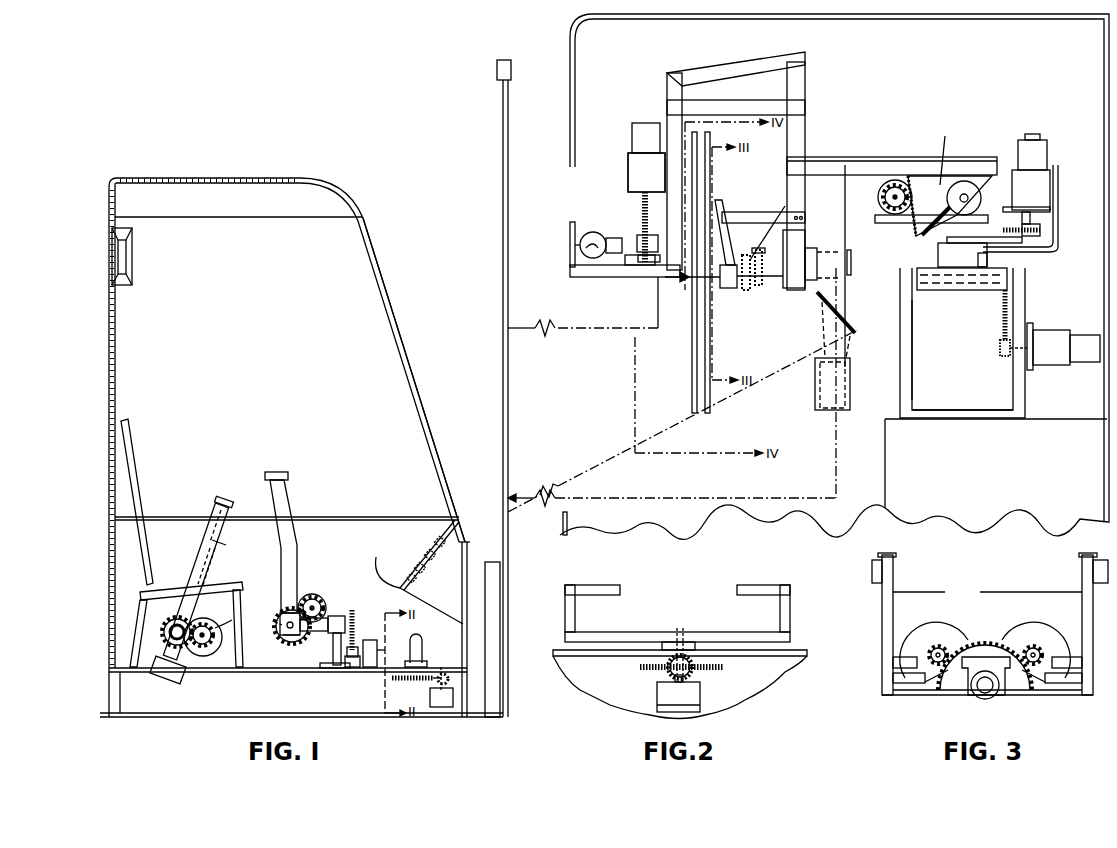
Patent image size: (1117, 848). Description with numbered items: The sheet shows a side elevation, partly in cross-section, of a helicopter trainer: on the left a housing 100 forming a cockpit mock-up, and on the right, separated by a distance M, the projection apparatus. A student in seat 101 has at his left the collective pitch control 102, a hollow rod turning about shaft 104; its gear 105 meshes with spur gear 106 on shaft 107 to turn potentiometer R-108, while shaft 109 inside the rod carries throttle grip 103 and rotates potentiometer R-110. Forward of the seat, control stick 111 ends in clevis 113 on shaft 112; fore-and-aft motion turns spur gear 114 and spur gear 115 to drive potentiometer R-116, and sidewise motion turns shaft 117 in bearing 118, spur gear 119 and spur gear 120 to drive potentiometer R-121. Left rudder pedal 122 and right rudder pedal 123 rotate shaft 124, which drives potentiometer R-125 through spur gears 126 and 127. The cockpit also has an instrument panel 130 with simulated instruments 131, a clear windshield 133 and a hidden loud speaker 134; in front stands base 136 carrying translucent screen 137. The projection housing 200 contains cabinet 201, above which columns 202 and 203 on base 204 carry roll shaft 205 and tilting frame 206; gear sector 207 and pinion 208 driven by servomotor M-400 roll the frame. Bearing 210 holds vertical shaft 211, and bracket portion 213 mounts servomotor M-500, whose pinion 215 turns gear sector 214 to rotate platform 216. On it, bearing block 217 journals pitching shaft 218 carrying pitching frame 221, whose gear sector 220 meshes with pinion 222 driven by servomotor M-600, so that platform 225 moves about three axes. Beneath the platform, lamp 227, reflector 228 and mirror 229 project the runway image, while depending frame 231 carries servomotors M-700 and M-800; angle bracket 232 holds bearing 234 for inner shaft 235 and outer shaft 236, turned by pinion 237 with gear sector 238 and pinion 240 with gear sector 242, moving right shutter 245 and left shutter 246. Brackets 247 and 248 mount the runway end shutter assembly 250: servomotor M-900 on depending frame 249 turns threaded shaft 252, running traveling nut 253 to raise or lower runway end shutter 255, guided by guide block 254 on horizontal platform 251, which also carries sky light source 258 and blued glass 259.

In FIG. 1, the housing 100 is at (255, 178).
In FIG. 1, the seat 101 is at (130, 440).
In FIG. 1, the collective pitch control 102 is at (208, 550).
In FIG. 1, the throttle grip 103 is at (216, 504).
In FIG. 1, the shaft 104 is at (172, 632).
In FIG. 1, the gear 105 is at (186, 628).
In FIG. 1, the spur gear 106 is at (224, 624).
In FIG. 1, the shaft 107 is at (195, 652).
In FIG. 1, the potentiometer R-108 is at (280, 613).
In FIG. 1, the shaft 109 is at (208, 565).
In FIG. 1, the potentiometer R-110 is at (178, 682).
In FIG. 1, the control stick 111 is at (298, 536).
In FIG. 1, the shaft 112 is at (290, 649).
In FIG. 1, the clevis 113 is at (282, 610).
In FIG. 1, the spur gear 114 is at (300, 642).
In FIG. 1, the spur gear 115 is at (312, 596).
In FIG. 1, the potentiometer R-116 is at (326, 604).
In FIG. 1, the shaft 117 is at (326, 615).
In FIG. 1, the bearing 118 is at (345, 616).
In FIG. 1, the spur gear 119 is at (355, 622).
In FIG. 1, the spur gear 120 is at (367, 655).
In FIG. 1, the potentiometer R-121 is at (375, 672).
In FIG. 2, the left rudder pedal 122 is at (612, 584).
In FIG. 1, the right rudder pedal 123 is at (422, 636).
In FIG. 2, the right rudder pedal 123 is at (752, 572).
In FIG. 1, the shaft 124 is at (435, 682).
In FIG. 2, the shaft 124 is at (678, 645).
In FIG. 1, the potentiometer R-125 is at (435, 700).
In FIG. 2, the potentiometer R-125 is at (657, 690).
In FIG. 1, the spur gear 126 is at (420, 682).
In FIG. 2, the spur gear 126 is at (640, 668).
In FIG. 1, the spur gear 127 is at (454, 681).
In FIG. 2, the spur gear 127 is at (700, 676).
In FIG. 1, the simulated instrument panel 130 is at (420, 572).
In FIG. 1, the instruments 131 is at (425, 548).
In FIG. 1, the windshield 133 is at (393, 295).
In FIG. 1, the loud speaker 134 is at (133, 268).
In FIG. 1, the base 136 is at (498, 562).
In FIG. 1, the translucent screen 137 is at (503, 358).
In FIG. 1, the housing 200 is at (570, 30).
In FIG. 1, the cabinet 201 is at (990, 445).
In FIG. 1, the column 202 is at (912, 308).
In FIG. 1, the column 203 is at (1027, 303).
In FIG. 1, the base 204 is at (985, 410).
In FIG. 1, the roll shaft 205 is at (1027, 279).
In FIG. 1, the tilting frame 206 is at (938, 258).
In FIG. 1, the gear sector 207 is at (1003, 318).
In FIG. 1, the pinion 208 is at (1000, 358).
In FIG. 1, the bearing 210 is at (975, 240).
In FIG. 1, the vertical shaft 211 is at (988, 262).
In FIG. 1, the bracket portion 213 is at (1058, 249).
In FIG. 1, the gear sector 214 is at (1020, 225).
In FIG. 1, the pinion 215 is at (1040, 228).
In FIG. 1, the platform 216 is at (880, 225).
In FIG. 1, the bearing block 217 is at (925, 232).
In FIG. 1, the pitching shaft 218 is at (966, 192).
In FIG. 1, the gear sector 220 is at (950, 206).
In FIG. 1, the pitching frame 221 is at (954, 153).
In FIG. 1, the pinion 222 is at (878, 197).
In FIG. 1, the platform 225 is at (906, 158).
In FIG. 1, the lamp 227 is at (850, 366).
In FIG. 1, the reflector 228 is at (816, 404).
In FIG. 1, the mirror 229 is at (852, 328).
In FIG. 1, the depending frame 231 is at (788, 205).
In FIG. 3, the depending frame 231 is at (987, 592).
In FIG. 1, the angle bracket 232 is at (743, 259).
In FIG. 1, the bearing 234 is at (714, 200).
In FIG. 3, the bearing 234 is at (975, 690).
In FIG. 3, the inner shaft 235 is at (985, 698).
In FIG. 3, the outer shaft 236 is at (990, 690).
In FIG. 1, the pinion 237 is at (760, 288).
In FIG. 3, the pinion 237 is at (1038, 660).
In FIG. 1, the gear sector 238 is at (755, 290).
In FIG. 3, the gear sector 238 is at (1030, 690).
In FIG. 1, the pinion 240 is at (785, 206).
In FIG. 3, the pinion 240 is at (932, 660).
In FIG. 1, the gear sector 242 is at (745, 292).
In FIG. 3, the gear sector 242 is at (945, 690).
In FIG. 1, the right shutter 245 is at (690, 340).
In FIG. 1, the left shutter 246 is at (708, 350).
In FIG. 1, the bracket 247 is at (688, 72).
In FIG. 1, the bracket 248 is at (766, 100).
In FIG. 1, the depending frame 249 is at (667, 116).
In FIG. 1, the runway end shutter assembly 250 is at (619, 134).
In FIG. 1, the horizontal platform 251 is at (572, 280).
In FIG. 1, the threaded shaft 252 is at (640, 207).
In FIG. 1, the traveling nut 253 is at (640, 264).
In FIG. 1, the guide block 254 is at (668, 278).
In FIG. 1, the runway end shutter 255 is at (655, 313).
In FIG. 1, the sky light source 258 is at (598, 232).
In FIG. 1, the blued glass 259 is at (576, 246).
In FIG. 1, the distance M is at (672, 493).
In FIG. 1, the angle of roll servomotor M-400 is at (1040, 345).
In FIG. 1, the heading servomotor M-500 is at (1030, 185).
In FIG. 1, the pitch servomotor M-600 is at (892, 158).
In FIG. 3, the left shutter servomotor M-700 is at (910, 628).
In FIG. 1, the right shutter servomotor M-800 is at (846, 270).
In FIG. 3, the right shutter servomotor M-800 is at (1062, 628).
In FIG. 1, the runway end shutter servomotor M-900 is at (640, 170).